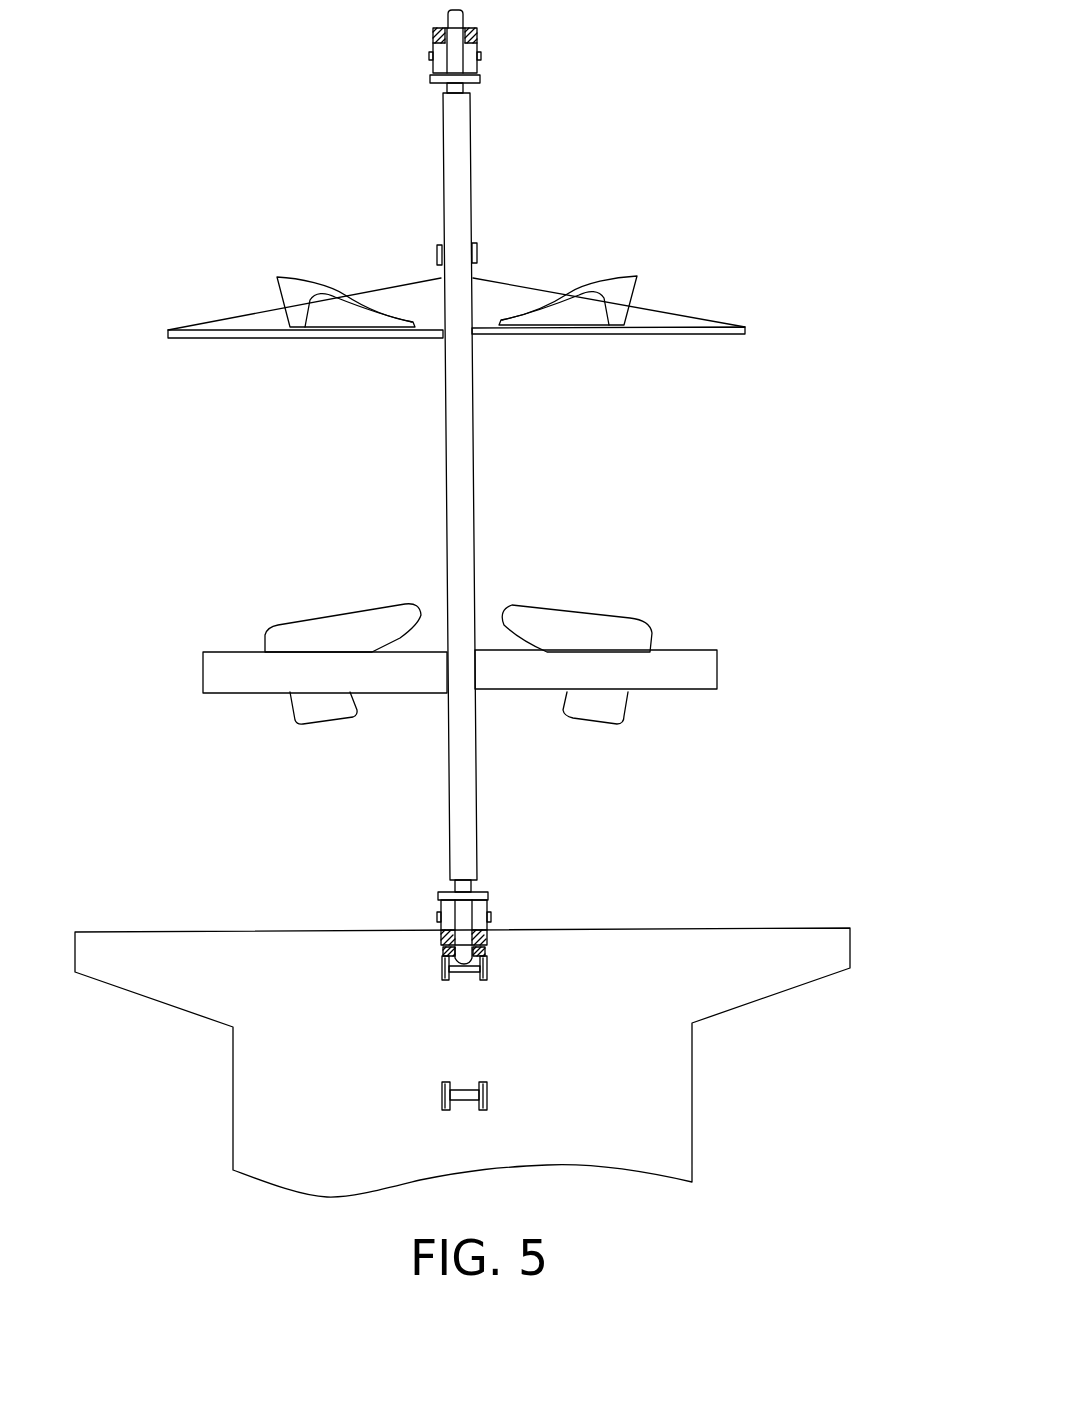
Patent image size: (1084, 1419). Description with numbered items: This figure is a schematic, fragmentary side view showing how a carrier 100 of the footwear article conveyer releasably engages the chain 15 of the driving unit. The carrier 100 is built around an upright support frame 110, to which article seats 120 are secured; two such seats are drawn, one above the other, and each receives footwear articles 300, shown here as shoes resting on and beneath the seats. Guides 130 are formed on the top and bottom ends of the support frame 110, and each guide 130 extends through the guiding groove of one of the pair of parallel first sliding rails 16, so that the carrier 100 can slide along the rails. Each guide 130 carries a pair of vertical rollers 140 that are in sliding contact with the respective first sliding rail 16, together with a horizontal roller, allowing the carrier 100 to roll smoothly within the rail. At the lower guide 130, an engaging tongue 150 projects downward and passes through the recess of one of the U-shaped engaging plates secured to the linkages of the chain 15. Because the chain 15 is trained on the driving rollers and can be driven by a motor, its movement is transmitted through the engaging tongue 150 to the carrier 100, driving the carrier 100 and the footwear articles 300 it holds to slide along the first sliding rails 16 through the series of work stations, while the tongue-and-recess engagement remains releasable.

The carrier 100 is at (270, 198).
The support frame 110 is at (462, 165).
The article seat 120 is at (685, 335).
The guide 130 is at (480, 78).
The vertical roller 140 is at (487, 908).
The engaging tongue 150 is at (445, 943).
The chain 15 is at (487, 975).
The first sliding rail 16 is at (433, 32).
The footwear article 300 is at (620, 282).